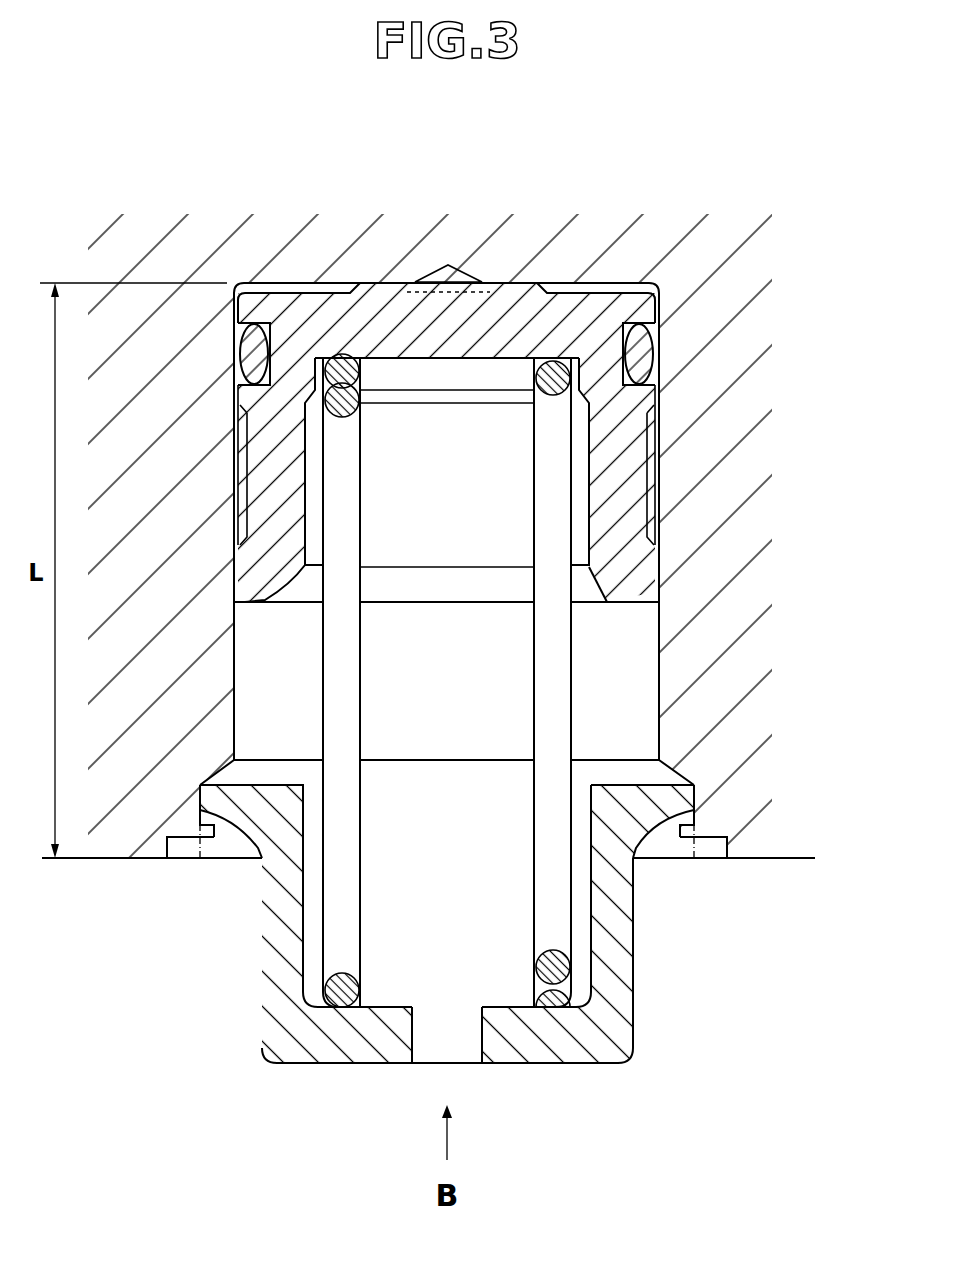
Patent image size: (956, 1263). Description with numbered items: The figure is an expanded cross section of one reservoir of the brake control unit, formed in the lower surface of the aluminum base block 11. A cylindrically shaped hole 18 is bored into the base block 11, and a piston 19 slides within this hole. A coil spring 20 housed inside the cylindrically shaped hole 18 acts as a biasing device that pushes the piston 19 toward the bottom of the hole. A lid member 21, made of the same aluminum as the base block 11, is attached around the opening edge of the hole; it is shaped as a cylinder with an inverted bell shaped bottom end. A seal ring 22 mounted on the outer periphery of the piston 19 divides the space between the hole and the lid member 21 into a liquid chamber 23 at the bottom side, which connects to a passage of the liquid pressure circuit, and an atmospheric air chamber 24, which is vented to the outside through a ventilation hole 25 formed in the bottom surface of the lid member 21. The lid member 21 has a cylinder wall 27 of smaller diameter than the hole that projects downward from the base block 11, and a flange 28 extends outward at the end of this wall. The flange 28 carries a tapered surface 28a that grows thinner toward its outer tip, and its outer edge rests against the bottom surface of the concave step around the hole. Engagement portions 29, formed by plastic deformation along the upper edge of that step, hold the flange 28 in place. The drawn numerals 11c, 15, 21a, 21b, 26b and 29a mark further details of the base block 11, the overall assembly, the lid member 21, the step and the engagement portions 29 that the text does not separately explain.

The base block 11 is at (128, 818).
The block surface 11c is at (770, 858).
The bearing assembly 15 is at (712, 584).
The cylindrically shaped hole 18 is at (658, 666).
The piston 19 is at (625, 460).
The coil spring 20 is at (555, 510).
The lid member 21 is at (577, 1050).
The bottom wall 21a is at (496, 1040).
The flange 21b is at (658, 772).
The seal ring 22 is at (650, 356).
The liquid chamber 23 is at (303, 292).
The atmospheric air chamber 24 is at (385, 870).
The ventilation hole 25 is at (432, 1047).
The curved surface 26b is at (200, 810).
The cylinder wall 27 is at (636, 976).
The flange 28 is at (684, 822).
The tapered surface 28a is at (637, 840).
The engagement portion 29 is at (208, 837).
The clip axis 29a is at (183, 840).